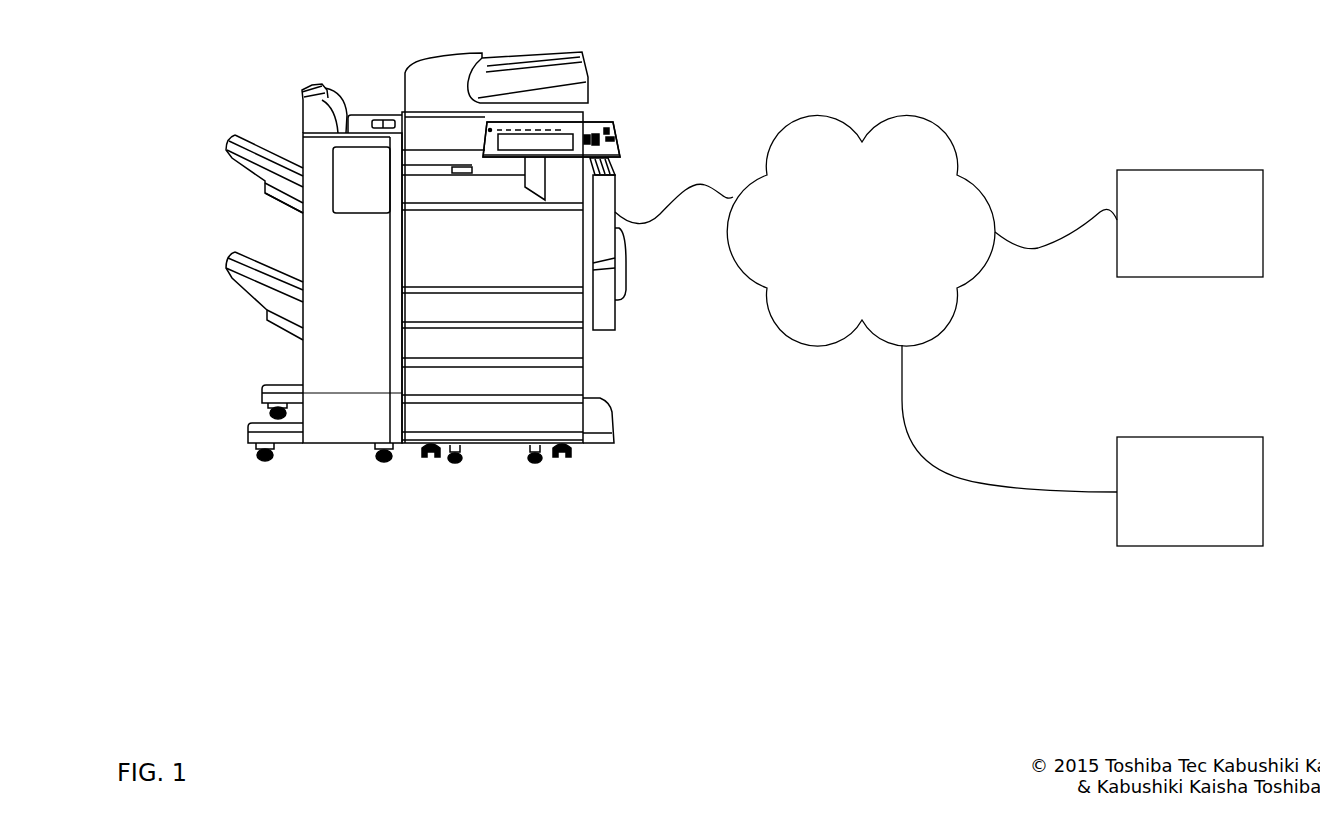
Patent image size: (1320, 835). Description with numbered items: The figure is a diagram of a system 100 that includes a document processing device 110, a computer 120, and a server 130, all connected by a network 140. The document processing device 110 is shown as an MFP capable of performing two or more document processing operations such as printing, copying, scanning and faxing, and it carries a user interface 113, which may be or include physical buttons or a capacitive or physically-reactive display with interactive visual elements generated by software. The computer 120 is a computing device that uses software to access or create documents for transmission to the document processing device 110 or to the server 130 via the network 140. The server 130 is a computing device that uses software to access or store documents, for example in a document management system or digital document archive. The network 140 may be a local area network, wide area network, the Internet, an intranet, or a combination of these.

The system 100 is at (814, 459).
The document processing device 110 is at (451, 284).
The user interface 113 is at (556, 128).
The computer 120 is at (1190, 223).
The server 130 is at (1190, 491).
The network 140 is at (861, 231).